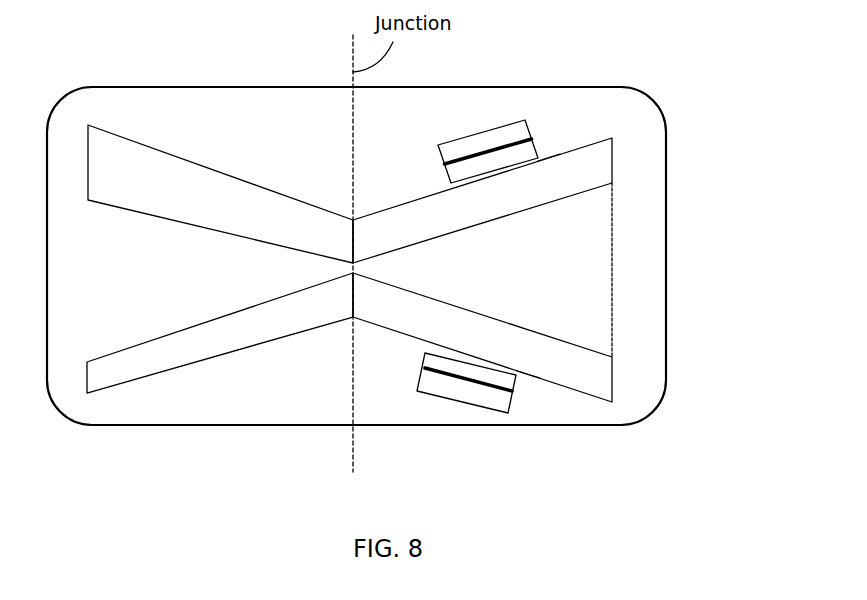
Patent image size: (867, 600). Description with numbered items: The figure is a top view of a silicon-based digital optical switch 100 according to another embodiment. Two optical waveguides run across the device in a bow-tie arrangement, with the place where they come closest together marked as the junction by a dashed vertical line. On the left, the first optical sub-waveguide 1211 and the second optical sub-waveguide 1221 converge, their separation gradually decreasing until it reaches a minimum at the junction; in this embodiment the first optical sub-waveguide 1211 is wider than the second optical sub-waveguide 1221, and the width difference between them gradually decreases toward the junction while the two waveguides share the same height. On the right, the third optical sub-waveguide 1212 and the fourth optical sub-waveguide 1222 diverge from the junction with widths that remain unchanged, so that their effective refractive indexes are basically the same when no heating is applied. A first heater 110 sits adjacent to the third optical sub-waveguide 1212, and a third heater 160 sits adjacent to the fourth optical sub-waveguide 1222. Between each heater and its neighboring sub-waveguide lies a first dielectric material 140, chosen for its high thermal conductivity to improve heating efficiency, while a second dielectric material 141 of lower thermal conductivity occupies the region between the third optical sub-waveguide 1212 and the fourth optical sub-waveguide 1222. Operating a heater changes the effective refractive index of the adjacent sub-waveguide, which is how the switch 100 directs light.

The silicon-based digital optical switch 100 is at (92, 87).
The first heater 110 is at (485, 130).
The first dielectric material 140 is at (540, 153).
The second dielectric material 141 is at (587, 238).
The third heater 160 is at (468, 410).
The first optical sub-waveguide 1211 is at (173, 168).
The third optical sub-waveguide 1212 is at (602, 160).
The second optical sub-waveguide 1221 is at (160, 352).
The fourth optical sub-waveguide 1222 is at (597, 372).